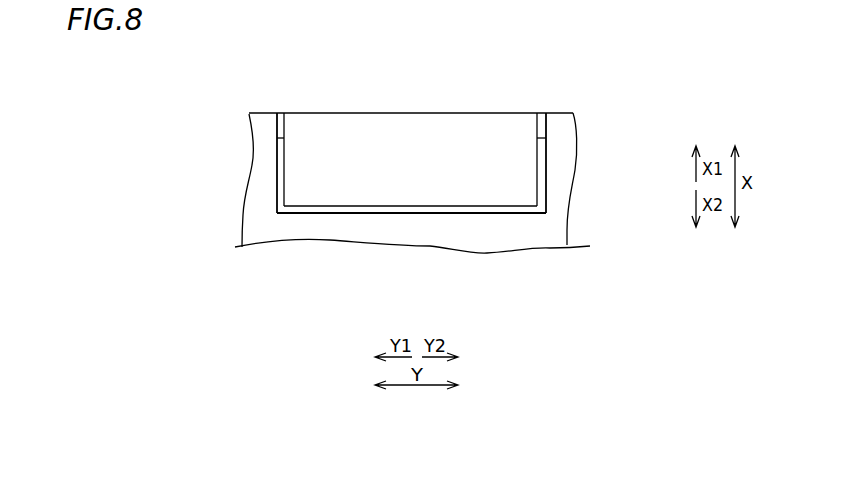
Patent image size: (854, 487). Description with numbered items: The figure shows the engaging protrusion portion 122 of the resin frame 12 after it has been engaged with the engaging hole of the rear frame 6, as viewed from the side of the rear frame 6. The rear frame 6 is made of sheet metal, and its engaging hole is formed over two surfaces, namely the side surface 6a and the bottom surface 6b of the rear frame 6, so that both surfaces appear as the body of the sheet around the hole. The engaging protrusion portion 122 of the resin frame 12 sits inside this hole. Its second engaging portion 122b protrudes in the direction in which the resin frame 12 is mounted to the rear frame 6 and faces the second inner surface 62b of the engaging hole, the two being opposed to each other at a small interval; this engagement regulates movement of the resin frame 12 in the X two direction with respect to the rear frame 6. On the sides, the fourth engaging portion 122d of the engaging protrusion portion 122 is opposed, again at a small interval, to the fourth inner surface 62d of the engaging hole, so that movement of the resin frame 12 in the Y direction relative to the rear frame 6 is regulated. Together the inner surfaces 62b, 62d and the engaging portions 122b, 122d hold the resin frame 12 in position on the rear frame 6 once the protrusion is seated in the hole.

The rear frame 6 is at (448, 179).
The side surface of the rear frame 6a is at (282, 114).
The bottom surface of the rear frame 6b is at (568, 147).
The fourth inner surface 62d is at (538, 170).
The second inner surface 62b is at (421, 210).
The resin frame 12 is at (400, 179).
The engaging protrusion portion 122 is at (400, 179).
The fourth engaging portion 122d is at (281, 185).
The second engaging portion 122b is at (395, 207).